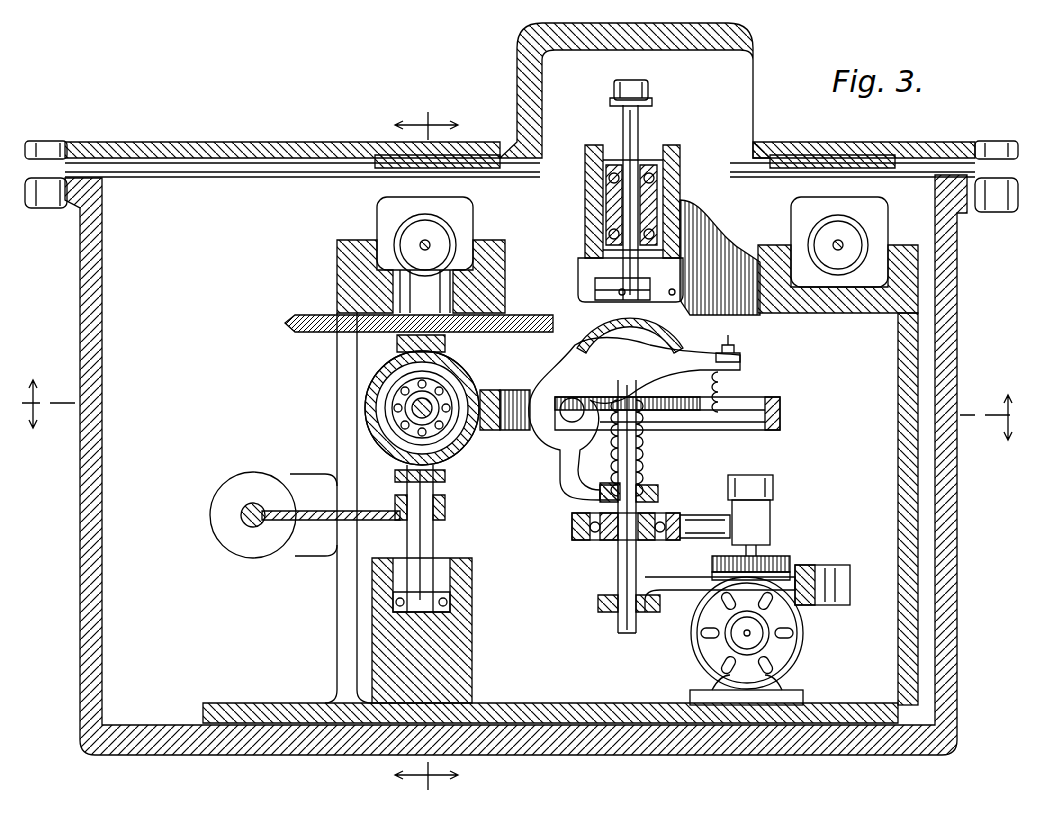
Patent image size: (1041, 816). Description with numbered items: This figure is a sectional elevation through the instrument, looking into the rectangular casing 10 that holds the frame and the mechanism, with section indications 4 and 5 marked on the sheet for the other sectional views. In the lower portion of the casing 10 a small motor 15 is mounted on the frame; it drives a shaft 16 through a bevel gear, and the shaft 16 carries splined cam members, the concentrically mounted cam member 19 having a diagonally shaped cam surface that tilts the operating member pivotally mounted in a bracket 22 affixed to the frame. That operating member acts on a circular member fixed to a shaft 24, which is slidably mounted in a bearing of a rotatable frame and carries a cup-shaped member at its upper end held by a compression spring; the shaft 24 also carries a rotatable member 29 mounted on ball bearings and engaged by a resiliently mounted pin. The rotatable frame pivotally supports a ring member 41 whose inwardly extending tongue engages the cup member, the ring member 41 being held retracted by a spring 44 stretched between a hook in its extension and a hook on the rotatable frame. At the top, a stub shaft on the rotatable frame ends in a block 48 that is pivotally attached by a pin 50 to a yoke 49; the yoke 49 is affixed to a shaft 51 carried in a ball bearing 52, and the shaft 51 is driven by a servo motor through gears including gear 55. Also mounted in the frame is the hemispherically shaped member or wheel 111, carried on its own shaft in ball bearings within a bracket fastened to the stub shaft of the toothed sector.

The container or casing 10 is at (957, 414).
The hemispherically shaped member or wheel 111 is at (462, 382).
The ball bearing 52 is at (585, 196).
The shaft 51 is at (640, 132).
The gear 55 is at (650, 98).
The yoke 49 is at (578, 270).
The block 48 is at (580, 316).
The pin 50 is at (688, 312).
The spring 44 is at (722, 380).
The ring member 41 is at (780, 400).
The shaft 24 is at (618, 573).
The rotatable member 29 is at (572, 528).
The shaft 16 is at (768, 552).
The cam member 19 is at (790, 566).
The bracket 22 is at (832, 567).
The motor 15 is at (803, 642).
The section line 4- 4 is at (518, 410).
The section line 5- 5 is at (426, 449).